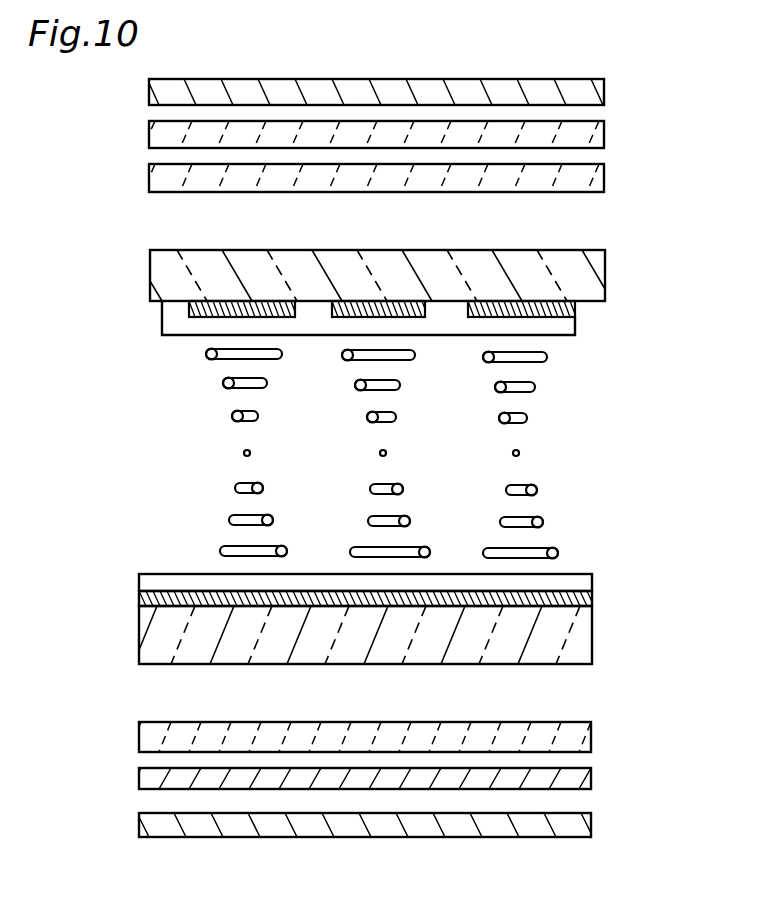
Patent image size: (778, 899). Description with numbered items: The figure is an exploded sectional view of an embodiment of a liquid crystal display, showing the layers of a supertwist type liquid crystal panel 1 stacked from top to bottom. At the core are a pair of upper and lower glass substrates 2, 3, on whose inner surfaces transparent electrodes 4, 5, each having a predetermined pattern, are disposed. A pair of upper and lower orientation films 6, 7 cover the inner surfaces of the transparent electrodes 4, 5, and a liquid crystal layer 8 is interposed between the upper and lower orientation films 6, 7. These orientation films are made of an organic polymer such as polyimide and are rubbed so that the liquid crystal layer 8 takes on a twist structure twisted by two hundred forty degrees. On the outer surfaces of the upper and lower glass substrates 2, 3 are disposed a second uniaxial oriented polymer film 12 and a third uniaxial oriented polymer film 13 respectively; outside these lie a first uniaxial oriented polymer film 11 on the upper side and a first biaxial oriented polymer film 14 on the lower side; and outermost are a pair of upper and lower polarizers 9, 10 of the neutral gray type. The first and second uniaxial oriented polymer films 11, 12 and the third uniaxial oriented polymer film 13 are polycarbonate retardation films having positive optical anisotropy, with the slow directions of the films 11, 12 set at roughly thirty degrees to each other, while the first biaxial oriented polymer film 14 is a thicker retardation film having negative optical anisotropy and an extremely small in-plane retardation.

The supertwist type liquid crystal panel 1 is at (113, 252).
The upper glass substrate 2 is at (605, 272).
The lower glass substrate 3 is at (592, 648).
The transparent electrode 4 is at (575, 312).
The transparent electrode 5 is at (592, 600).
The upper orientation film 6 is at (575, 330).
The lower orientation film 7 is at (592, 582).
The liquid crystal layer 8 is at (152, 552).
The upper polarizer 9 is at (604, 97).
The lower polarizer 10 is at (591, 830).
The first uniaxial oriented polymer film 11 is at (604, 140).
The second uniaxial oriented polymer film 12 is at (604, 178).
The third uniaxial oriented polymer film 13 is at (591, 738).
The first biaxial oriented polymer film 14 is at (591, 780).